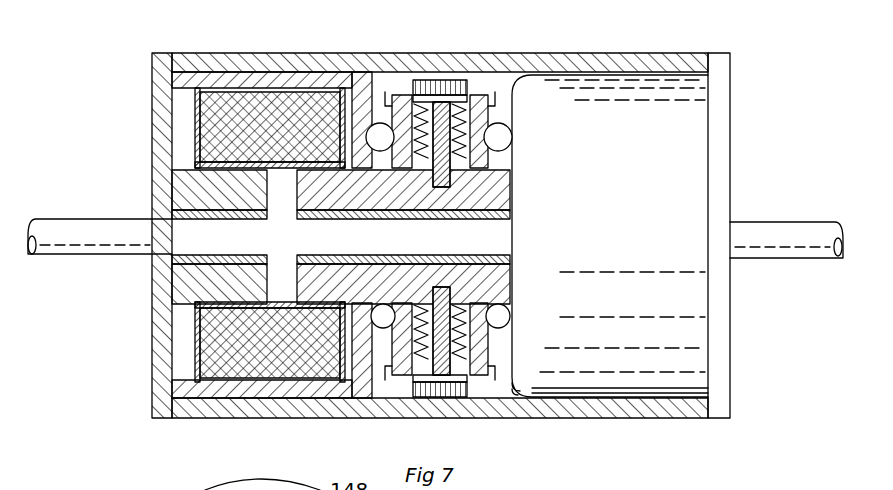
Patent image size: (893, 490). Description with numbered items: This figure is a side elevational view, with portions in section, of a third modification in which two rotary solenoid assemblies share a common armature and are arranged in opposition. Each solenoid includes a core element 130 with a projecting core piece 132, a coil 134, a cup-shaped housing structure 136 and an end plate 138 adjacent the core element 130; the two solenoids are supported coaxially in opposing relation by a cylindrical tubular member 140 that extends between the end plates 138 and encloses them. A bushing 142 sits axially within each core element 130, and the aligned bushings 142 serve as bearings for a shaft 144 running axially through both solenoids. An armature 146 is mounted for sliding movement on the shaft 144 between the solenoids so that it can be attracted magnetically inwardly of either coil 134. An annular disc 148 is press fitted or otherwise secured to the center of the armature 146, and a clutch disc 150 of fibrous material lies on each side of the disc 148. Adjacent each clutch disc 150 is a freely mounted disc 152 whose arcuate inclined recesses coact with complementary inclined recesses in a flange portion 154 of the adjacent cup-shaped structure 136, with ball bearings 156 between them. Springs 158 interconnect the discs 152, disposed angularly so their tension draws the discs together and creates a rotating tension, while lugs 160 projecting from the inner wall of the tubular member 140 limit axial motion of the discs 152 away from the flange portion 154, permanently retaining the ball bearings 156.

The core element 130 is at (195, 115).
The projecting core piece 132 is at (197, 178).
The coil 134 is at (287, 100).
The cup-shaped housing structure 136 is at (218, 80).
The end plate 138 is at (160, 137).
The cylindrical tubular member 140 is at (462, 68).
The bushing 142 is at (180, 262).
The shaft 144 is at (82, 218).
The armature 146 is at (512, 200).
The annular disc 148 is at (495, 62).
The clutch disc 150 is at (440, 95).
The freely mounted disc 152 is at (400, 95).
The flange portion 154 is at (356, 95).
The ball bearing 156 is at (372, 150).
The spring 158 is at (455, 82).
The lug 160 is at (470, 70).